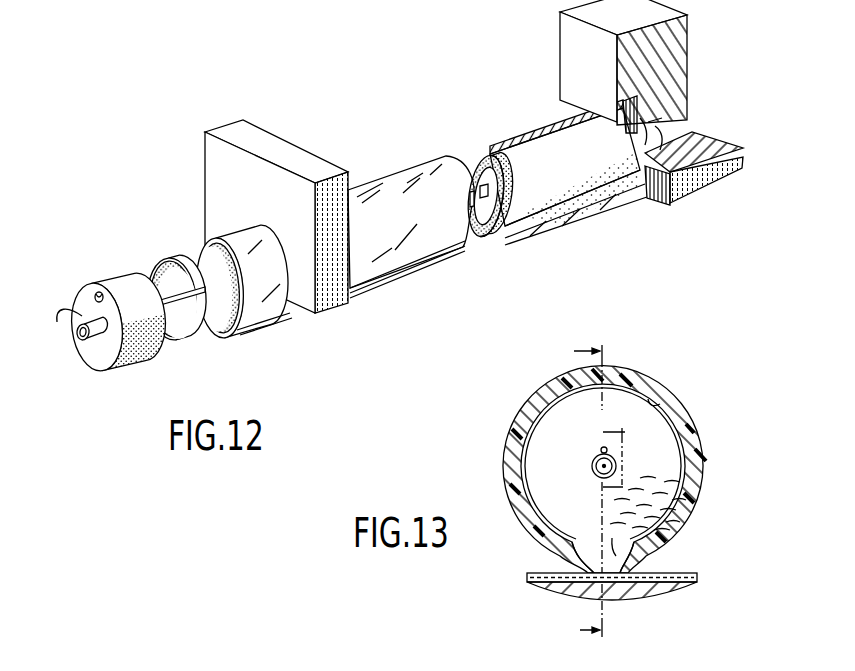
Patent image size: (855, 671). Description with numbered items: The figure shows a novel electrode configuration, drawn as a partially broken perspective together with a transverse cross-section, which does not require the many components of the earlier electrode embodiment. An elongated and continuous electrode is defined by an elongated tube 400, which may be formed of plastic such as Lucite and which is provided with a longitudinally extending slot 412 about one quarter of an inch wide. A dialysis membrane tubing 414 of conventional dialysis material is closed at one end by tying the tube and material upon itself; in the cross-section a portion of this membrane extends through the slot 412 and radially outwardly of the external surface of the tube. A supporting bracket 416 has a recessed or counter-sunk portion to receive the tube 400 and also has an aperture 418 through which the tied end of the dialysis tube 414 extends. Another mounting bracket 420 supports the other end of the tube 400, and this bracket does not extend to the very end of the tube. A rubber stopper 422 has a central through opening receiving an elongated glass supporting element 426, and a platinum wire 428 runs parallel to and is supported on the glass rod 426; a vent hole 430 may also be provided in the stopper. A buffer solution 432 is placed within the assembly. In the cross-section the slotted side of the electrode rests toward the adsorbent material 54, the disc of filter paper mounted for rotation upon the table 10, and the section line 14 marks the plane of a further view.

In FIG. 12, the elongated tube 400 is at (560, 222).
In FIG. 13, the elongated tube 400 is at (698, 452).
In FIG. 12, the longitudinally extending slot 412 is at (208, 334).
In FIG. 13, the longitudinally extending slot 412 is at (655, 540).
In FIG. 12, the dialysis membrane tubing 414 is at (480, 152).
In FIG. 13, the dialysis membrane tubing 414 is at (661, 399).
In FIG. 12, the supporting bracket 416 is at (677, 82).
In FIG. 12, the aperture 418 is at (678, 128).
In FIG. 12, the mounting bracket 420 is at (225, 192).
In FIG. 12, the rubber stopper 422 is at (110, 357).
In FIG. 12, the glass supporting element 426 is at (170, 298).
In FIG. 13, the glass supporting element 426 is at (592, 466).
In FIG. 12, the platinum wire 428 is at (57, 322).
In FIG. 13, the platinum wire 428 is at (606, 448).
In FIG. 12, the vent hole 430 is at (98, 292).
In FIG. 13, the buffer solution 432 is at (591, 514).
In FIG. 13, the adsorbent material 54 is at (548, 573).
In FIG. 13, the table 10 is at (640, 592).
In FIG. 13, the section line 14 is at (600, 487).